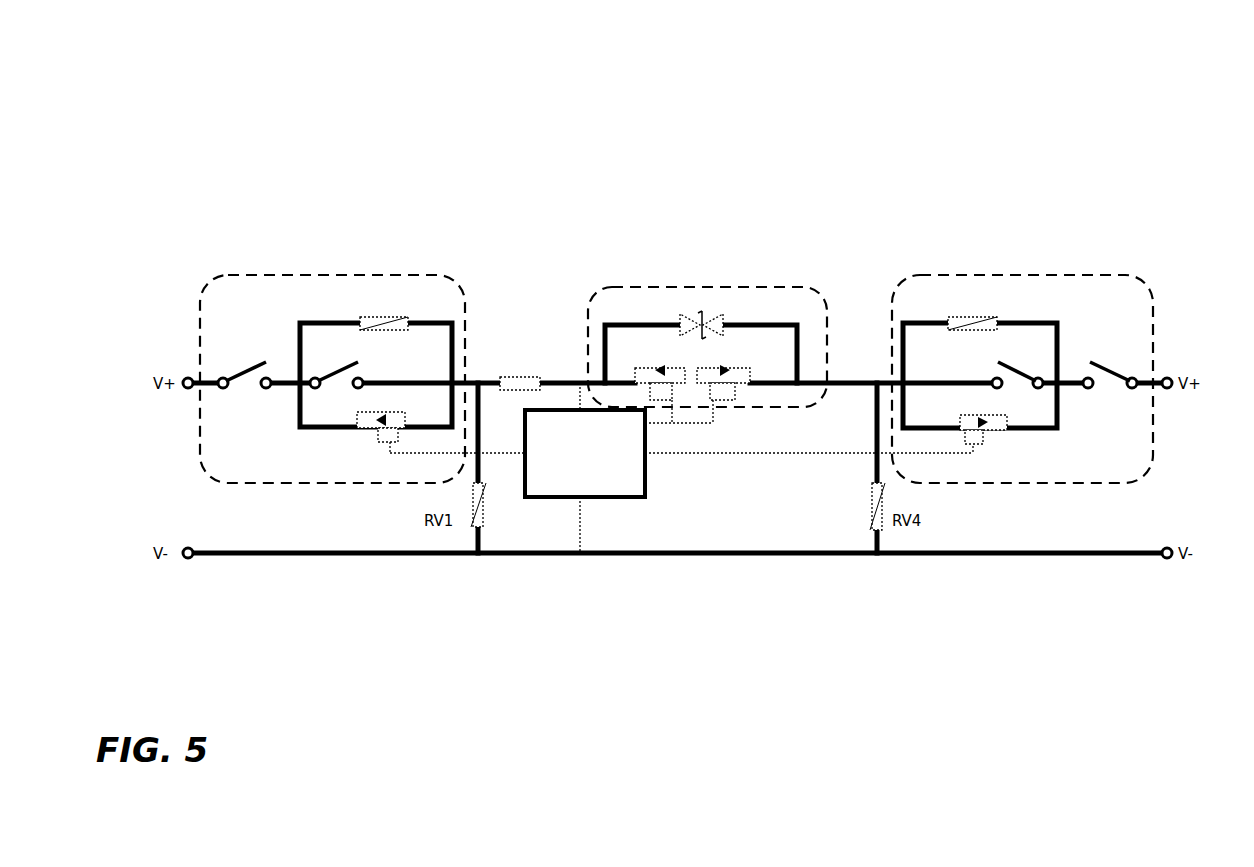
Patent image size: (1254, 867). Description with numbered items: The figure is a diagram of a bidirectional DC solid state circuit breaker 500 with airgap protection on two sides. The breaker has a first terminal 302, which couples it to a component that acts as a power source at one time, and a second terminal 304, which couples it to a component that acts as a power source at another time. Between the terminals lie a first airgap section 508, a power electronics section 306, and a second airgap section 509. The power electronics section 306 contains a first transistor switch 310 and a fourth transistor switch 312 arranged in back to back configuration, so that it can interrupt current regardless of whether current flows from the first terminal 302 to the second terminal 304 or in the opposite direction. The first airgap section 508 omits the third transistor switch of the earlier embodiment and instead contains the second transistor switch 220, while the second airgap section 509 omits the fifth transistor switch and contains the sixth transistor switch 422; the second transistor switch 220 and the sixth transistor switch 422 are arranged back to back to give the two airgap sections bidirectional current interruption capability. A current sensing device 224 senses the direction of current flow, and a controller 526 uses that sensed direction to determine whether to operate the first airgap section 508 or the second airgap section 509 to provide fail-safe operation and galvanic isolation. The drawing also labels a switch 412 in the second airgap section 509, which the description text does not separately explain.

The bidirectional DC solid state circuit breaker 500 is at (752, 104).
The first airgap section 508 is at (320, 365).
The second airgap section 509 is at (1019, 368).
The power electronics section 306 is at (688, 363).
The first terminal 302 is at (185, 376).
The second terminal 304 is at (1168, 379).
The current sensing device 224 is at (512, 392).
The controller 526 is at (681, 468).
The second transistor switch Q2 220 is at (360, 426).
The first transistor switch Q1 310 is at (677, 380).
The fourth transistor switch Q4 312 is at (745, 380).
The switch SW3 412 is at (1038, 387).
The sixth transistor switch Q6 422 is at (1003, 430).